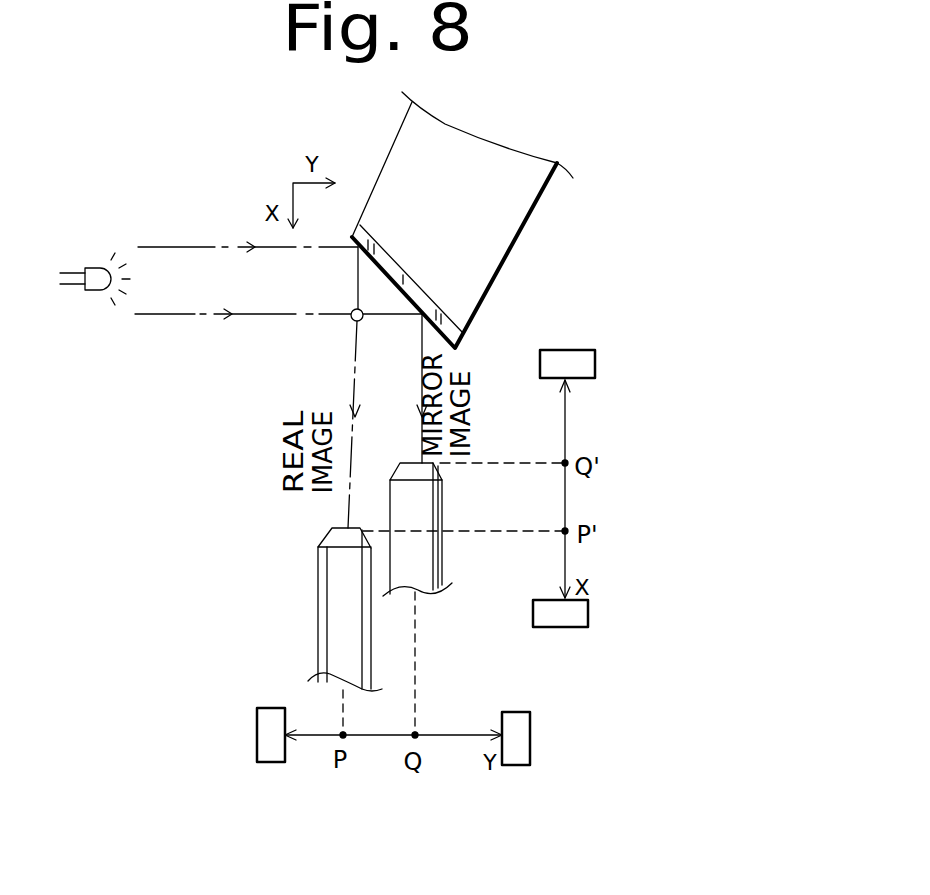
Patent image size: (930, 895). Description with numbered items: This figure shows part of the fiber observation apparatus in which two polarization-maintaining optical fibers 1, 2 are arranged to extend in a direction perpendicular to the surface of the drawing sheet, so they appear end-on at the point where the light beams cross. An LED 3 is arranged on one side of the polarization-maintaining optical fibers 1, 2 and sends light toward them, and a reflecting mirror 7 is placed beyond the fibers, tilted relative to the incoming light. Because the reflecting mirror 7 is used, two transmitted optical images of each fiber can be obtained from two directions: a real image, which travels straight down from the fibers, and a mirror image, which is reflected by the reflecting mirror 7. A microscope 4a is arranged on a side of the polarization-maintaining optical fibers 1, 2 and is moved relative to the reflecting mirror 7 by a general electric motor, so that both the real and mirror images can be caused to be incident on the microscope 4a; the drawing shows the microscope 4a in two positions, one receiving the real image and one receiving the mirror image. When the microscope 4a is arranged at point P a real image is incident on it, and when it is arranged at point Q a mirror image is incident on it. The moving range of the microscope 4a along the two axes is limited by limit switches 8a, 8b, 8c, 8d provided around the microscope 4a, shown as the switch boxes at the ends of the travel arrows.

The polarization-maintaining optical fiber 1 is at (351, 319).
The polarization-maintaining optical fiber 2 is at (365, 320).
The LED 3 is at (78, 263).
The microscope 4a is at (333, 628).
The reflecting mirror 7 is at (417, 298).
The limit switch 8a is at (267, 763).
The limit switch 8b is at (515, 768).
The limit switch 8c is at (558, 630).
The limit switch 8d is at (595, 363).